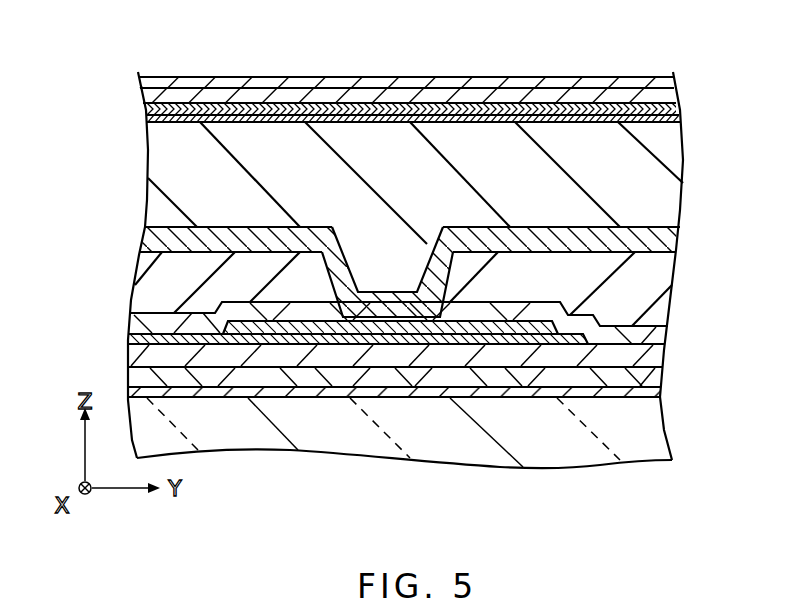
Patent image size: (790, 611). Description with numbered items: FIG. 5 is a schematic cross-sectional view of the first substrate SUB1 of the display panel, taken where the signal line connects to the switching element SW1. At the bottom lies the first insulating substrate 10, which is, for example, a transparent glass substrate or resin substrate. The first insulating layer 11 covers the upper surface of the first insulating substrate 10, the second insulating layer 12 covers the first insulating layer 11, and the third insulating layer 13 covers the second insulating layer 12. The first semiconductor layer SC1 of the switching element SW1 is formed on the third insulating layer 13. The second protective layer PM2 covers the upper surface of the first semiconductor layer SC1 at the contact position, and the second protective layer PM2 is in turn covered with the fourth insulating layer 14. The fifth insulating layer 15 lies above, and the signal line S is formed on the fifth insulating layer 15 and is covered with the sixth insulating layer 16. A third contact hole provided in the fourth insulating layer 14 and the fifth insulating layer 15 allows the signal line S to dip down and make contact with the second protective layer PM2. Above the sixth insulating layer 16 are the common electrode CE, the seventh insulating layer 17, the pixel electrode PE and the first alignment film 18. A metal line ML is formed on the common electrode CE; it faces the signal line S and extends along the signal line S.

The first substrate SUB1 is at (100, 87).
The first insulating substrate 10 is at (652, 435).
The first insulating layer 11 is at (645, 391).
The second insulating layer 12 is at (657, 375).
The third insulating layer 13 is at (650, 352).
The fourth insulating layer 14 is at (657, 333).
The fifth insulating layer 15 is at (652, 276).
The sixth insulating layer 16 is at (660, 147).
The seventh insulating layer 17 is at (647, 97).
The first alignment film 18 is at (627, 80).
The pixel electrode PE is at (185, 96).
The metal line ML is at (330, 110).
The common electrode CE is at (390, 119).
The signal line S is at (532, 227).
The second protective layer PM2 is at (503, 320).
The switching element SW1 is at (233, 360).
The first semiconductor layer SC1 is at (445, 343).